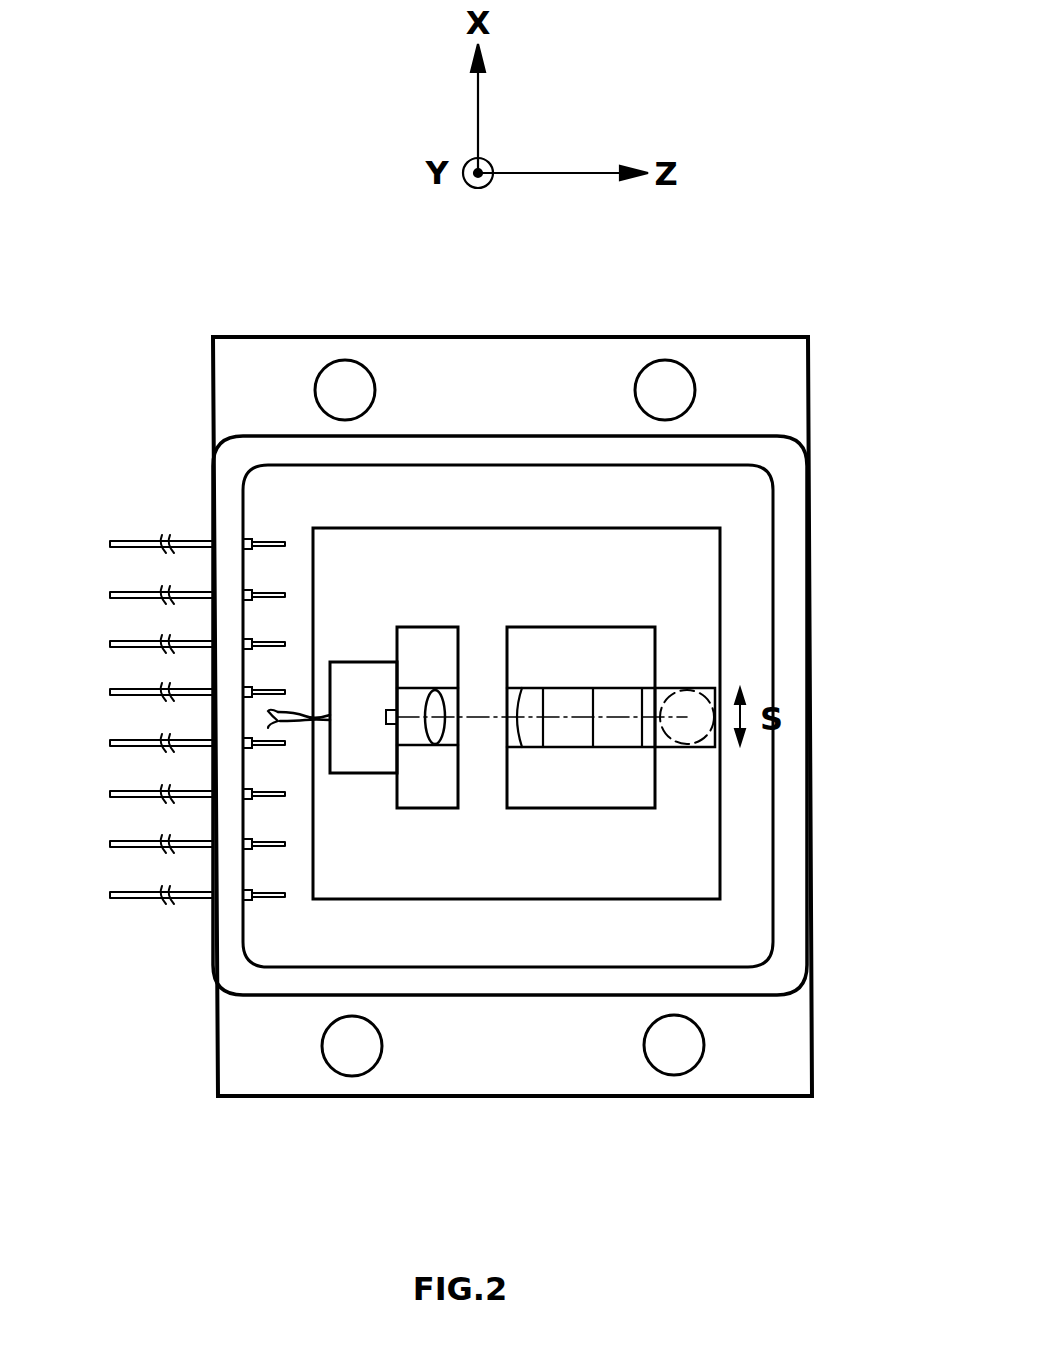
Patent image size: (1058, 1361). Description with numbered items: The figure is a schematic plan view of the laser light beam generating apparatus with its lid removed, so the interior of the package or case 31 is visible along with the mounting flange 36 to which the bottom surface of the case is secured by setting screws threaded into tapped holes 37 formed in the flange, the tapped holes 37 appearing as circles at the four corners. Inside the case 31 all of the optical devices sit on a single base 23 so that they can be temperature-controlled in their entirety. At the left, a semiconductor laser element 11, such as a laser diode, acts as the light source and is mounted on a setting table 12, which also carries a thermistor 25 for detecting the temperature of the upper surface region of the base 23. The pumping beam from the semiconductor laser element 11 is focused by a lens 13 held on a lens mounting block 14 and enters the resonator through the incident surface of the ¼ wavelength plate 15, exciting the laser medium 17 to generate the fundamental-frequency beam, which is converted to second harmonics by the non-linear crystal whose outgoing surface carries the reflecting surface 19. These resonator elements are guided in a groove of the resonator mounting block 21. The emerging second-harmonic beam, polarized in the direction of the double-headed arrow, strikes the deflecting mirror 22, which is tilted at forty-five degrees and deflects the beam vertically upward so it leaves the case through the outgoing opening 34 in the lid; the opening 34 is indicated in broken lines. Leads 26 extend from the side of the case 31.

The semiconductor laser element 11 is at (387, 710).
The setting table 12 is at (365, 755).
The lens 13 is at (437, 700).
The lens mounting block 14 is at (440, 790).
The ¼ wavelength plate 15 is at (528, 700).
The laser medium 17 is at (573, 700).
The reflecting surface 19 is at (620, 690).
The resonator mounting block 21 is at (615, 790).
The deflecting mirror 22 is at (715, 745).
The base 23 is at (670, 875).
The thermistor 25 is at (318, 725).
The lead pins 26 is at (122, 893).
The package or case 31 is at (200, 482).
The outgoing opening 34 is at (690, 742).
The mounting flange 36 is at (754, 357).
The tapped holes 37 is at (352, 356).